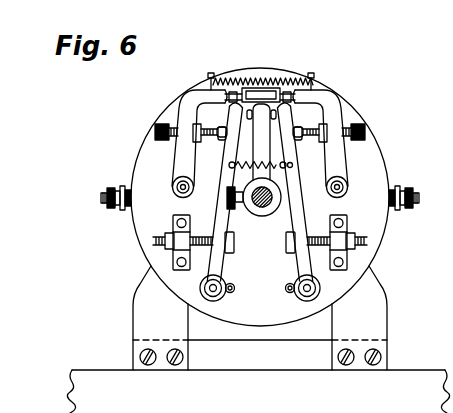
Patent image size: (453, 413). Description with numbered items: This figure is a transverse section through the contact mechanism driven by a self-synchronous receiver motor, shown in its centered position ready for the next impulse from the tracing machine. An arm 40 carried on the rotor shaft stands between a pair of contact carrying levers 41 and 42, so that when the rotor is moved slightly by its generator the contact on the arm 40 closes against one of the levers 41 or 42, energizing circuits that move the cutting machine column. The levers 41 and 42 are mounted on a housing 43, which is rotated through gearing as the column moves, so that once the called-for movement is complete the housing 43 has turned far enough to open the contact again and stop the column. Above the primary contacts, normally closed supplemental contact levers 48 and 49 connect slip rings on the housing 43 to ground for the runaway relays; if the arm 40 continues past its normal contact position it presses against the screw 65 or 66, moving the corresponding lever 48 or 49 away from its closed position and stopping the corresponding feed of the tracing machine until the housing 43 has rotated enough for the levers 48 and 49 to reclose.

The arm 40 is at (315, 98).
The contact carrying lever 41 is at (230, 179).
The contact carrying lever 42 is at (297, 208).
The housing 43 is at (375, 162).
The supplemental contact lever 48 is at (207, 97).
The supplemental contact lever 49 is at (262, 140).
The screw 65 is at (156, 126).
The screw 66 is at (360, 122).